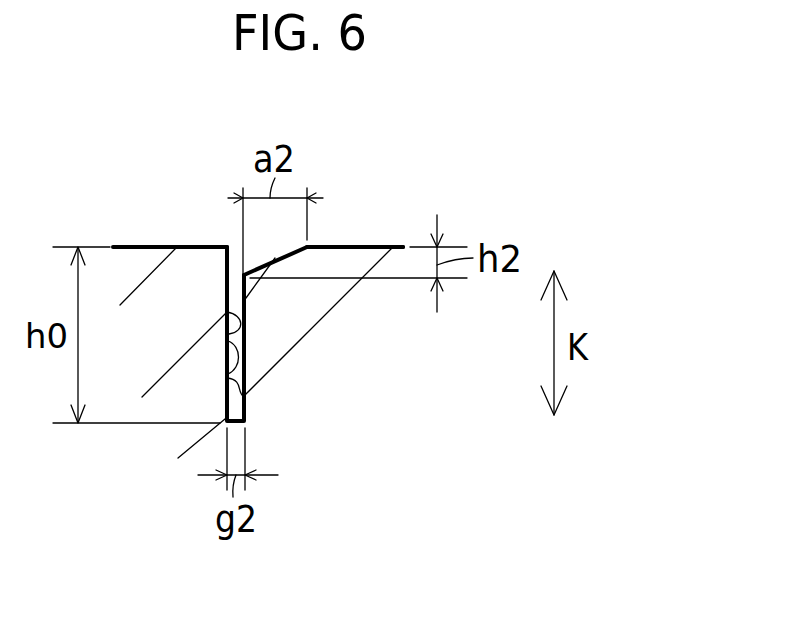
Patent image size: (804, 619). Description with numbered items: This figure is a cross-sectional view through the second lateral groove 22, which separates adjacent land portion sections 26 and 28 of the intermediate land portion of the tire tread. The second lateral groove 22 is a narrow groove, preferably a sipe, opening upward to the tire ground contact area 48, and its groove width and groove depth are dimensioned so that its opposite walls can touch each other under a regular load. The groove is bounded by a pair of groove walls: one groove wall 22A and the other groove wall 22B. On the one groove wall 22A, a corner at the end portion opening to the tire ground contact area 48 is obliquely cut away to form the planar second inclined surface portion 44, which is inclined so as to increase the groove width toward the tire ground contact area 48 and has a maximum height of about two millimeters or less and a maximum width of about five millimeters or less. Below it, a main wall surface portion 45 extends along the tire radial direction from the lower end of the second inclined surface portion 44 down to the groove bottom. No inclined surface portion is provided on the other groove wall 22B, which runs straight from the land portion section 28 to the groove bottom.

The second lateral groove 22 is at (237, 270).
The one groove wall 22A is at (244, 334).
The other groove wall 22B is at (226, 377).
The land portion section 26 is at (355, 245).
The land portion section 28 is at (142, 245).
The second inclined surface portion 44 is at (275, 258).
The main wall surface portion 45 is at (244, 397).
The tire ground contact area 48 is at (390, 245).